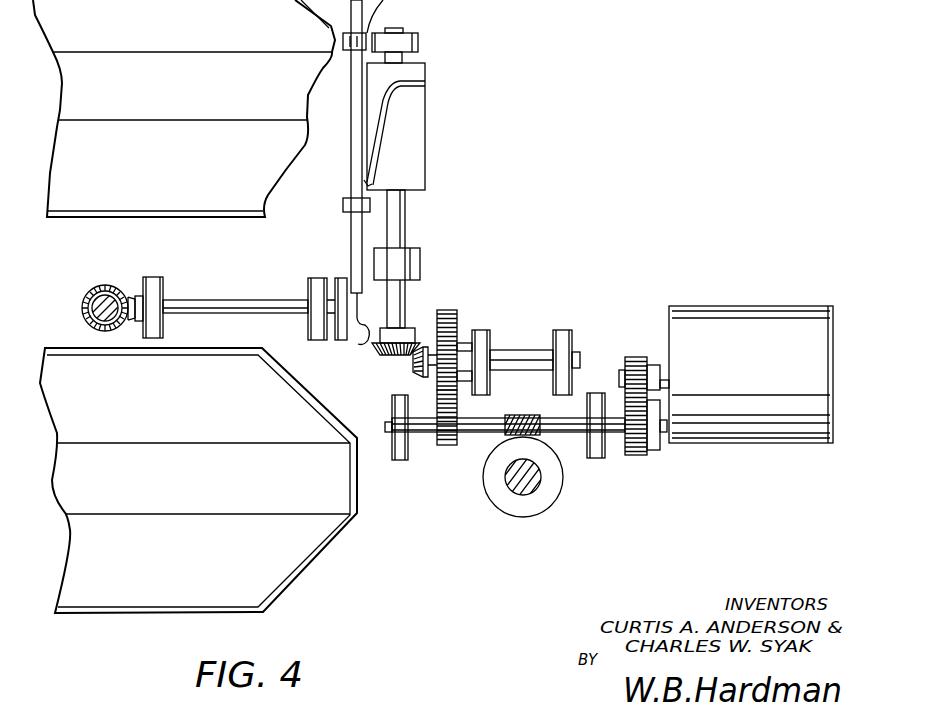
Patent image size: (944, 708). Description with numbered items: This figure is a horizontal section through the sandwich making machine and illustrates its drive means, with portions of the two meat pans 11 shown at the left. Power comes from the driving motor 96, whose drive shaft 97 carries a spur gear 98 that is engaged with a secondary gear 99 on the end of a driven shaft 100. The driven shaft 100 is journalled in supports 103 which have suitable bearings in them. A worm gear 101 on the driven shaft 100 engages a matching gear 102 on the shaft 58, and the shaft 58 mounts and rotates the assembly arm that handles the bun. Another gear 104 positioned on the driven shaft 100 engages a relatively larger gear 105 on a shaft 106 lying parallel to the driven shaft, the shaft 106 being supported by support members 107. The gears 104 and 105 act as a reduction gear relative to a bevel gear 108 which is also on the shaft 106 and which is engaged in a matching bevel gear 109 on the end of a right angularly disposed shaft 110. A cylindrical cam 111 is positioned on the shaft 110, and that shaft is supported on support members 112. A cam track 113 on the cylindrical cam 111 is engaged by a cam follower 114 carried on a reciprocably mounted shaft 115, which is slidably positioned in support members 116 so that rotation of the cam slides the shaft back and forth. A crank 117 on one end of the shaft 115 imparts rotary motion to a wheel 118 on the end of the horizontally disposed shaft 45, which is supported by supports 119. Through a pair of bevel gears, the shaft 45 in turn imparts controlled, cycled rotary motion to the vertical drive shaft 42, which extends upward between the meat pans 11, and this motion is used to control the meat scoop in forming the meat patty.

The meat pans 11 is at (217, 32).
The vertical drive shaft 42 is at (104, 286).
The horizontally disposed shaft 45 is at (204, 312).
The shaft 58 is at (535, 481).
The driving motor 96 is at (763, 306).
The drive shaft 97 is at (667, 375).
The spur gear 98 is at (633, 357).
The secondary gear 99 is at (648, 455).
The driven shaft 100 is at (478, 434).
The worm gear 101 is at (517, 416).
The matching gear 102 is at (538, 508).
The supports 103 is at (402, 462).
The gear 104 is at (455, 446).
The relatively larger gear 105 is at (447, 310).
The shaft 106 is at (509, 349).
The support members 107 is at (480, 330).
The bevel gear 108 is at (416, 364).
The matching bevel gear 109 is at (376, 352).
The right angularly disposed shaft 110 is at (397, 237).
The cylindrical cam 111 is at (425, 148).
The support members 112 is at (414, 33).
The cam track 113 is at (386, 115).
The cam follower 114 is at (362, 180).
The reciprocably mounted shaft 115 is at (352, 231).
The support members 116 is at (343, 205).
The crank 117 is at (360, 340).
The wheel 118 is at (334, 282).
The supports 119 is at (165, 290).